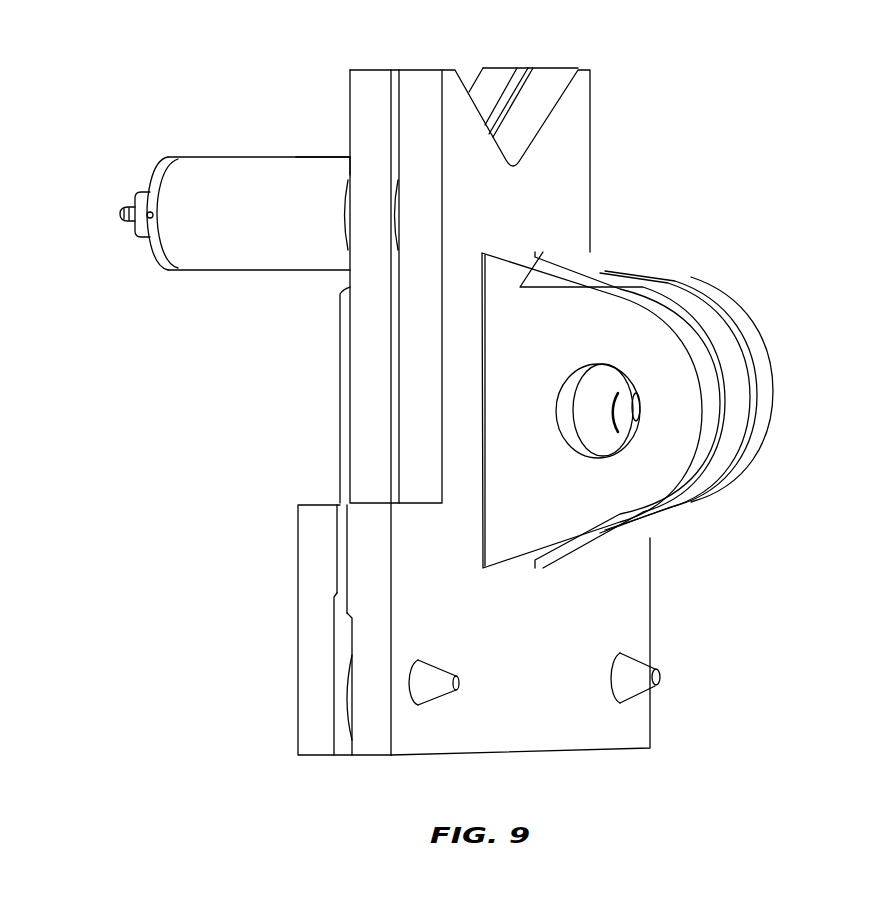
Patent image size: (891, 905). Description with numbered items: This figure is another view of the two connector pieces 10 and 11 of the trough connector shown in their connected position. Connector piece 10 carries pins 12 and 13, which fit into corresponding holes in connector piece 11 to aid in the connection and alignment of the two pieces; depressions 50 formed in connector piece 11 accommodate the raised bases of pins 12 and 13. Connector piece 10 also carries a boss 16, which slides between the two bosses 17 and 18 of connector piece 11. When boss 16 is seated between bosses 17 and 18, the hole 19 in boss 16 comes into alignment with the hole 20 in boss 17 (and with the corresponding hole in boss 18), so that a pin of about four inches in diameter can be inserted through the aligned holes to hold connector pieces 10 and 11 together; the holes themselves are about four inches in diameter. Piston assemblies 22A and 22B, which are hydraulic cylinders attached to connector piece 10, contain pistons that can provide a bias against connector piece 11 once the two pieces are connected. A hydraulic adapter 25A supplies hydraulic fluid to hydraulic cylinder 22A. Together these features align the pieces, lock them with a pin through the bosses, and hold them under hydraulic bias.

The connector piece 10 is at (330, 567).
The connector piece 11 is at (570, 627).
The pin 12 is at (444, 665).
The pin 13 is at (660, 672).
The boss 16 is at (725, 433).
The boss 17 is at (553, 333).
The boss 18 is at (743, 335).
The hole 19 is at (597, 407).
The hole 20 is at (570, 445).
The piston assembly 22A is at (273, 219).
The piston assembly 22B is at (296, 155).
The hydraulic adapter 25A is at (119, 214).
The depression 50 is at (352, 742).